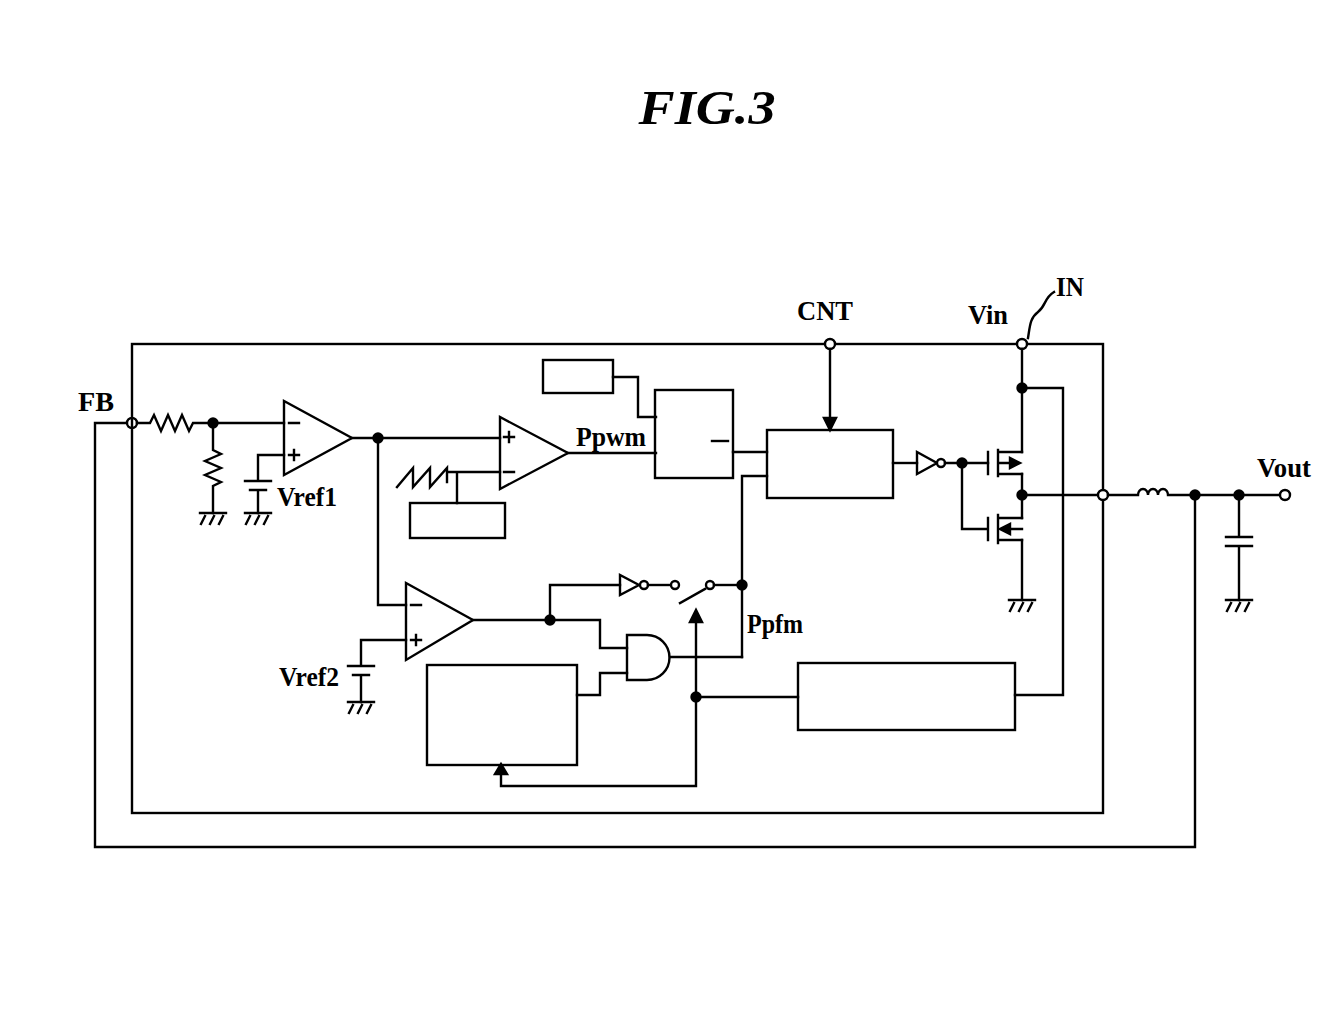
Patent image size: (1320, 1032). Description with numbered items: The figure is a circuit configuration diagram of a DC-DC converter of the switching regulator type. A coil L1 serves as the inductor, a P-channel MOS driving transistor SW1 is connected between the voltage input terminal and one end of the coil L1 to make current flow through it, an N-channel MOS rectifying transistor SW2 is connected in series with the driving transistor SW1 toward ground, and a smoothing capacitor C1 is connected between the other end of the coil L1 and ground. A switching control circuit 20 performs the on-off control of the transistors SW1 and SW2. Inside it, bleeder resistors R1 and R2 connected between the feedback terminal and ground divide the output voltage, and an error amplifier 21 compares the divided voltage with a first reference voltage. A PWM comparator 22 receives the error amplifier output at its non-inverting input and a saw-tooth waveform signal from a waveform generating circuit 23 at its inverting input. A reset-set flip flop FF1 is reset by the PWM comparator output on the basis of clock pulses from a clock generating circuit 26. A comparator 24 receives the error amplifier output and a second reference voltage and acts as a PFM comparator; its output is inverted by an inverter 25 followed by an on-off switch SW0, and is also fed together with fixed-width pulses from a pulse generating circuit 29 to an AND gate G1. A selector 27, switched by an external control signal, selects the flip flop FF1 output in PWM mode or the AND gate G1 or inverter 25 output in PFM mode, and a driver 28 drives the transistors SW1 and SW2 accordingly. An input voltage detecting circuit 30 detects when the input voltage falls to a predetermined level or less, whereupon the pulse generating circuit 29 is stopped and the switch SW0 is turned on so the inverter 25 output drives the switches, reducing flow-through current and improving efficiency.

The switching control circuit 20 is at (690, 344).
The error amplifier 21 is at (323, 418).
The PWM comparator 22 is at (510, 422).
The waveform generating circuit 23 is at (505, 538).
The comparator 24 is at (437, 583).
The inverter 25 is at (622, 575).
The clock generating circuit 26 is at (574, 360).
The selector 27 is at (838, 498).
The driver 28 is at (925, 452).
The pulse generating circuit 29 is at (427, 753).
The input voltage detecting circuit 30 is at (850, 663).
The reset-set flip flop FF1 is at (712, 390).
The AND gate G1 is at (684, 676).
The on-off switch SW0 is at (706, 575).
The driving transistor SW1 is at (993, 444).
The rectifying transistor SW2 is at (998, 537).
The bleeder resistor R1 is at (210, 405).
The bleeder resistor R2 is at (196, 473).
The coil L1 is at (1194, 470).
The smoothing capacitor C1 is at (1258, 553).